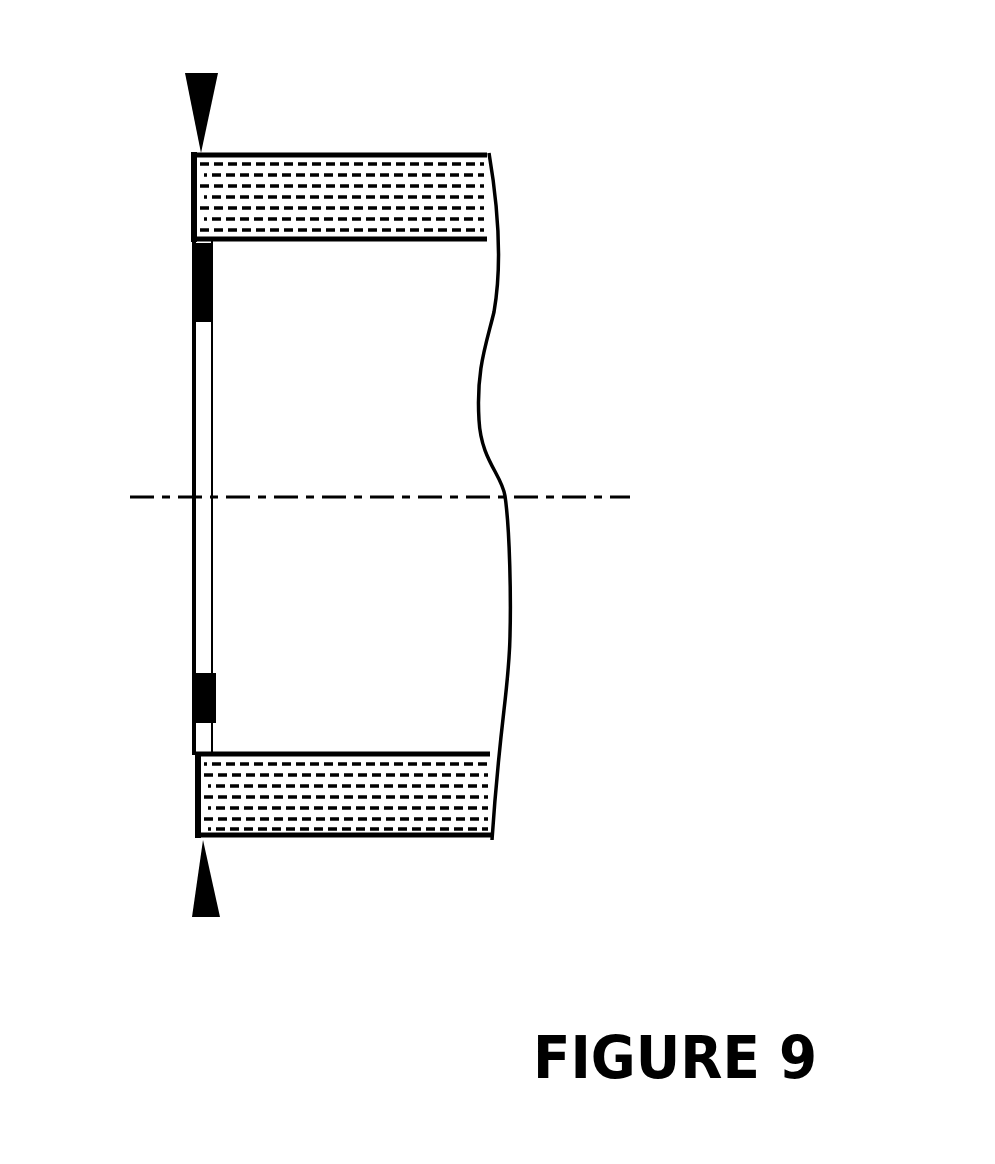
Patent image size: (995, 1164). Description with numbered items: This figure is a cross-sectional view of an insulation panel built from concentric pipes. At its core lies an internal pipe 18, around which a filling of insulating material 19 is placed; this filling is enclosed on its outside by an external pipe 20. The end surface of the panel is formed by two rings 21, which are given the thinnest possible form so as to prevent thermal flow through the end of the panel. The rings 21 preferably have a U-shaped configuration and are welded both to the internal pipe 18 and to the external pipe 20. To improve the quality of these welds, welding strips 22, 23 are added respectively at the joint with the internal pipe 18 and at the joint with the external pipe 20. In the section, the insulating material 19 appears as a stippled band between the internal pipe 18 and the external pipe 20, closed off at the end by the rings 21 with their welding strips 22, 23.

The internal pipe 18 is at (435, 242).
The filling of insulating material 19 is at (410, 496).
The external pipe 20 is at (420, 157).
The rings 21 is at (190, 200).
The strip 22 is at (192, 240).
The strip 23 is at (200, 153).